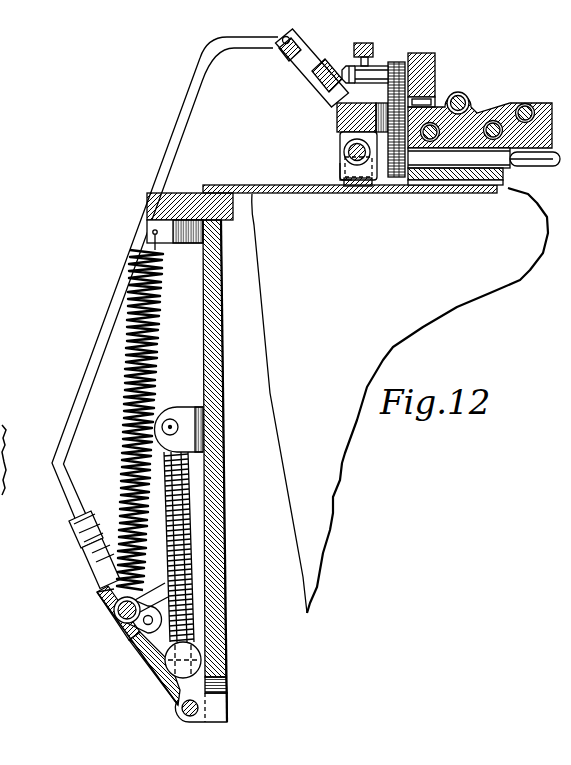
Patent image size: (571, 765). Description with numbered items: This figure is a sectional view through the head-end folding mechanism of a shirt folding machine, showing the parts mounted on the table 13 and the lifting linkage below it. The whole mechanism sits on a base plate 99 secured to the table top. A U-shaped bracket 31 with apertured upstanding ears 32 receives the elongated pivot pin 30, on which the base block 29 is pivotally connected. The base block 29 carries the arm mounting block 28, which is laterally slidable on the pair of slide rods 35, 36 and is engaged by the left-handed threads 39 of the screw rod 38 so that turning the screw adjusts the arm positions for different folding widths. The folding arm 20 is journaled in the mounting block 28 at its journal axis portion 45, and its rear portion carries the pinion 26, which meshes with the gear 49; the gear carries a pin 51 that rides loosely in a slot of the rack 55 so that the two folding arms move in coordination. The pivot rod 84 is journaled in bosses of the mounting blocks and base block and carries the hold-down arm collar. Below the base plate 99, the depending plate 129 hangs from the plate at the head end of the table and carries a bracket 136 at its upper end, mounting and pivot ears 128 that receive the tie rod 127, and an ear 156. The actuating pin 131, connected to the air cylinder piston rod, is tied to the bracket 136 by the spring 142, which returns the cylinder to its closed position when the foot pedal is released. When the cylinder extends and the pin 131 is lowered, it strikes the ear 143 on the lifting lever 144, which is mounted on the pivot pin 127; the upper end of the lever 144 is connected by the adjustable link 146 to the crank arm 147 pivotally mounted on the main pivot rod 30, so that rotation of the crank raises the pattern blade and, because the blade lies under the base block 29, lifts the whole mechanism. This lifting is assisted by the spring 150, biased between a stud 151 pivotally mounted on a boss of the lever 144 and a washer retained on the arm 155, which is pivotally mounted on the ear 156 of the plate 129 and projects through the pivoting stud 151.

The table 13 is at (298, 267).
The folding arm 20 is at (536, 167).
The pinion 26 is at (398, 178).
The arm mounting block 28 is at (477, 176).
The base block 29 is at (335, 120).
The pivot pin 30 is at (338, 153).
The U-shaped bracket 31 is at (358, 187).
The upstanding ears 32 is at (347, 175).
The slide rod 35 is at (491, 123).
The slide rod 36 is at (432, 141).
The screw rod 38 is at (530, 107).
The left-handed threads 39 is at (522, 101).
The journal axis portion 45 is at (503, 179).
The gear 49 is at (398, 61).
The pin 51 is at (380, 66).
The rack 55 is at (353, 45).
The pivot rod 84 is at (458, 92).
The base plate 99 is at (265, 187).
The tie rod 127 is at (175, 708).
The mounting and pivot ears 128 is at (216, 691).
The depending plate 129 is at (213, 488).
The actuating pin 131 is at (107, 610).
The bracket 136 is at (189, 193).
The spring 142 is at (162, 326).
The ear 143 is at (100, 627).
The lifting lever 144 is at (133, 658).
The adjustable link 146 is at (68, 507).
The crank arm 147 is at (298, 80).
The spring 150 is at (188, 567).
The stud 151 is at (193, 657).
The arm 155 is at (172, 421).
The ear 156 is at (197, 430).